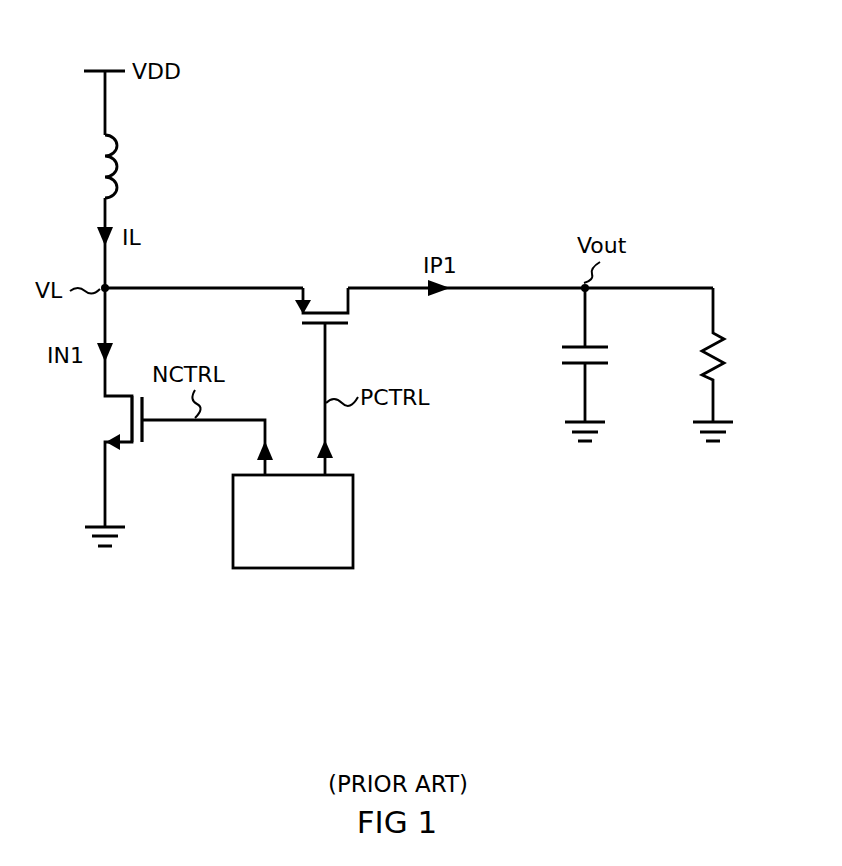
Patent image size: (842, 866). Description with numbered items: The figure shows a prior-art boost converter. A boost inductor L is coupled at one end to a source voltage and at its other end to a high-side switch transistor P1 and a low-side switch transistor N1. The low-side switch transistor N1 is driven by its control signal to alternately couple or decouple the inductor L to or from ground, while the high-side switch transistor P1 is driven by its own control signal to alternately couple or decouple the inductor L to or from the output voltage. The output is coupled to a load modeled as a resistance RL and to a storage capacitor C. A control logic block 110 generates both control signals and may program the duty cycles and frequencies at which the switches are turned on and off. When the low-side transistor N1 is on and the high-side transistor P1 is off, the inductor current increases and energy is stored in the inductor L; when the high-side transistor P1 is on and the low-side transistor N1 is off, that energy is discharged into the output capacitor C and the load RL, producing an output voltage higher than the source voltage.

The control logic block 110 is at (310, 568).
The boost inductor L is at (123, 166).
The low-side switch transistor N1 is at (107, 423).
The high-side switch transistor P1 is at (321, 289).
The storage capacitor C is at (573, 355).
The load resistance RL is at (731, 355).